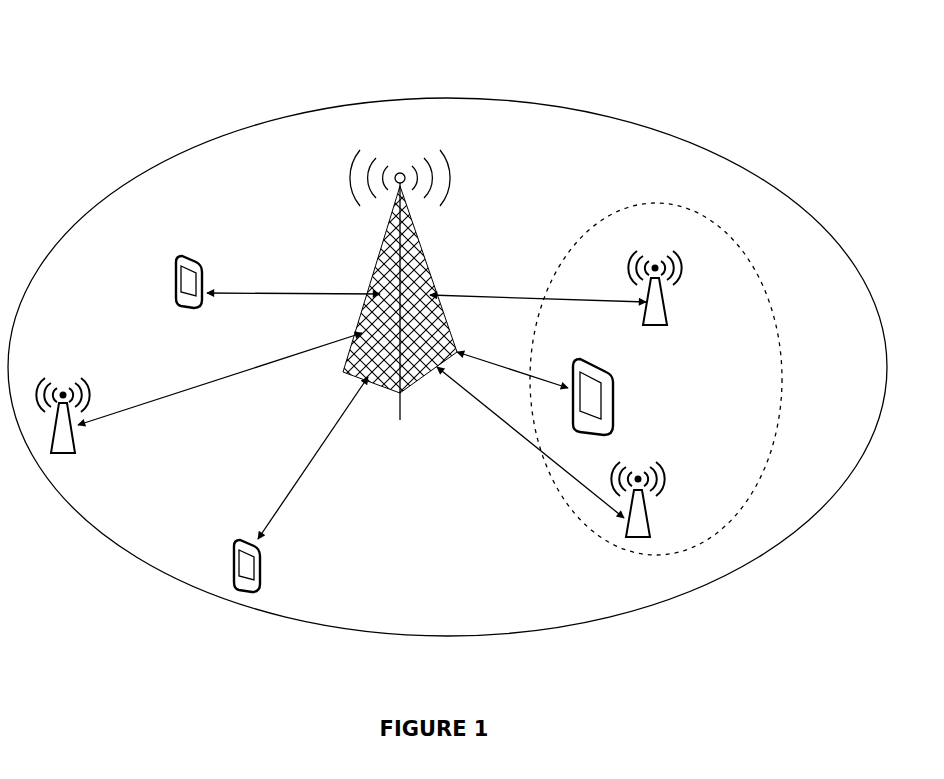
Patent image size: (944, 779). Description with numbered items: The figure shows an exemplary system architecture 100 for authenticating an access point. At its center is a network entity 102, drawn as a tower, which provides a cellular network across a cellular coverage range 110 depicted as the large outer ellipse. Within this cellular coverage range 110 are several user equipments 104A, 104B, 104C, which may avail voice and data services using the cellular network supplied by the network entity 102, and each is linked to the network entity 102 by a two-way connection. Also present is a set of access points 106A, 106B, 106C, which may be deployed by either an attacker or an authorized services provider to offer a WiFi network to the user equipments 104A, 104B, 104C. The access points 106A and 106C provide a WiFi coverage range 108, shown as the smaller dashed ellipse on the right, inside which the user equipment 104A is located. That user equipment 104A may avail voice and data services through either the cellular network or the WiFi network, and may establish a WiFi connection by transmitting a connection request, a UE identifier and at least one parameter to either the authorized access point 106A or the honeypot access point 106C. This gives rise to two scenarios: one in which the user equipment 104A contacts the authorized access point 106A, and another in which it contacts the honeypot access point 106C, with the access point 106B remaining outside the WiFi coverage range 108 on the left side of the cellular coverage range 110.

The system architecture 100 is at (571, 88).
The network entity 102 is at (428, 290).
The user equipment 104A is at (613, 412).
The user equipment 104B is at (261, 568).
The user equipment 104C is at (204, 281).
The authorized access point 106A is at (668, 310).
The access point 106B is at (78, 437).
The honeypot access point 106C is at (650, 522).
The WiFi coverage range 108 is at (770, 268).
The cellular coverage range 110 is at (782, 190).